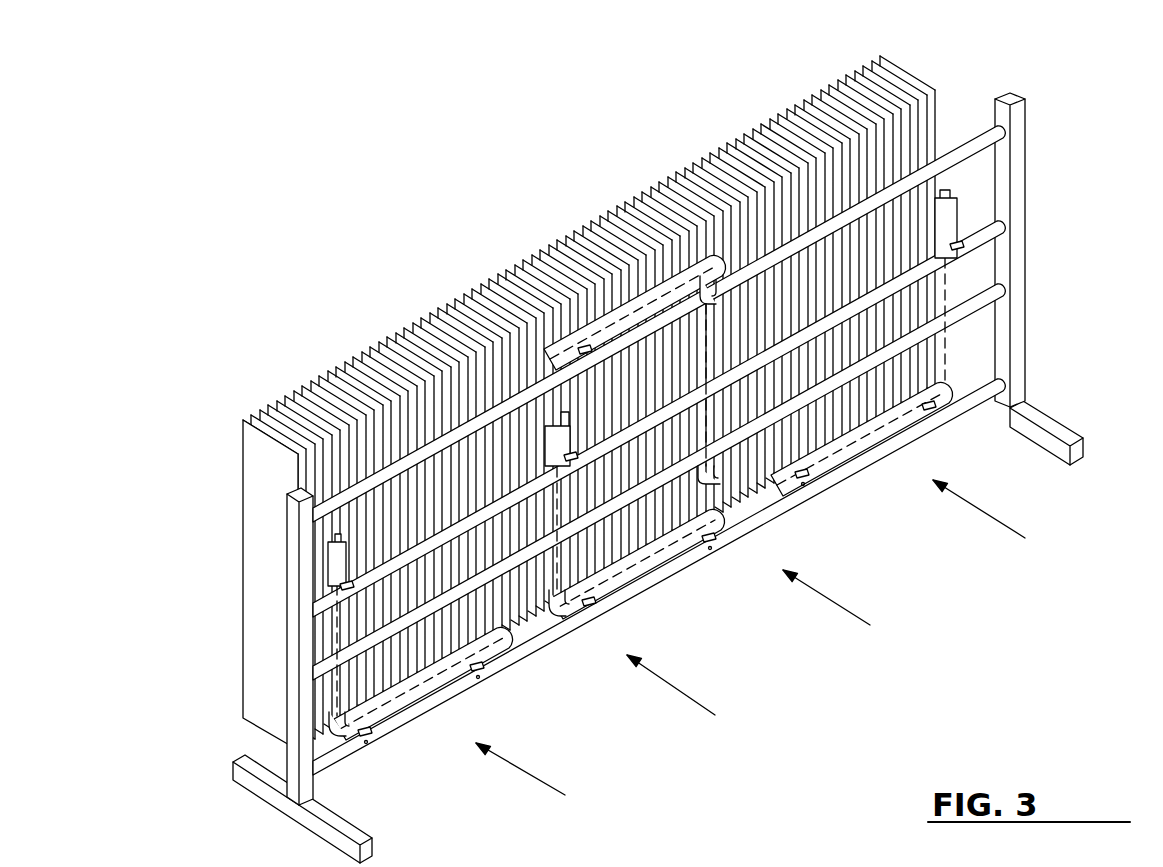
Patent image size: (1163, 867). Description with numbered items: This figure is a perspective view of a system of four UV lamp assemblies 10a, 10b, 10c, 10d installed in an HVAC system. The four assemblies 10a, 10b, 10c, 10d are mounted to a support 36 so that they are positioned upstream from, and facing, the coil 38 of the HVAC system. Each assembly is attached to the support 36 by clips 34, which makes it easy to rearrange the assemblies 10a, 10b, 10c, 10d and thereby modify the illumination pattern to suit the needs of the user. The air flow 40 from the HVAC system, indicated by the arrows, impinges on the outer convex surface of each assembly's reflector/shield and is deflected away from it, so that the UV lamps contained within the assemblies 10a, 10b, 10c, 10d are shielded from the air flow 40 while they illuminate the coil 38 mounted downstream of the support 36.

The UV lamp assembly 10a is at (397, 712).
The UV lamp assembly 10b is at (672, 565).
The UV lamp assembly 10c is at (858, 460).
The UV lamp assembly 10d is at (640, 303).
The clips 34 is at (957, 247).
The support 36 is at (960, 142).
The coil 38 is at (247, 467).
The air flow 40 is at (847, 607).